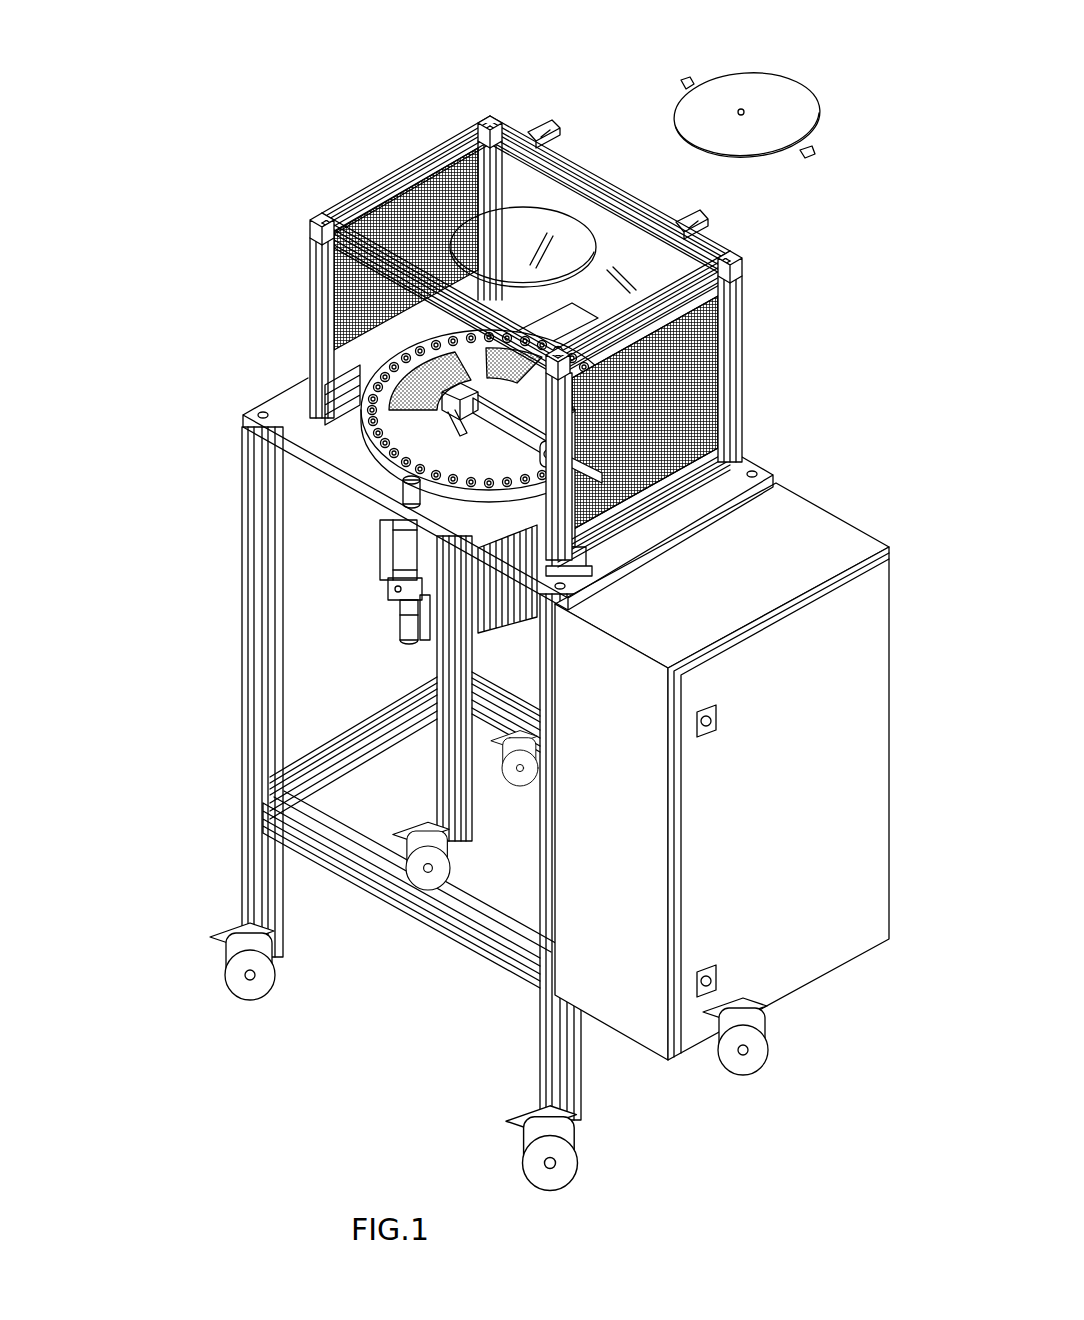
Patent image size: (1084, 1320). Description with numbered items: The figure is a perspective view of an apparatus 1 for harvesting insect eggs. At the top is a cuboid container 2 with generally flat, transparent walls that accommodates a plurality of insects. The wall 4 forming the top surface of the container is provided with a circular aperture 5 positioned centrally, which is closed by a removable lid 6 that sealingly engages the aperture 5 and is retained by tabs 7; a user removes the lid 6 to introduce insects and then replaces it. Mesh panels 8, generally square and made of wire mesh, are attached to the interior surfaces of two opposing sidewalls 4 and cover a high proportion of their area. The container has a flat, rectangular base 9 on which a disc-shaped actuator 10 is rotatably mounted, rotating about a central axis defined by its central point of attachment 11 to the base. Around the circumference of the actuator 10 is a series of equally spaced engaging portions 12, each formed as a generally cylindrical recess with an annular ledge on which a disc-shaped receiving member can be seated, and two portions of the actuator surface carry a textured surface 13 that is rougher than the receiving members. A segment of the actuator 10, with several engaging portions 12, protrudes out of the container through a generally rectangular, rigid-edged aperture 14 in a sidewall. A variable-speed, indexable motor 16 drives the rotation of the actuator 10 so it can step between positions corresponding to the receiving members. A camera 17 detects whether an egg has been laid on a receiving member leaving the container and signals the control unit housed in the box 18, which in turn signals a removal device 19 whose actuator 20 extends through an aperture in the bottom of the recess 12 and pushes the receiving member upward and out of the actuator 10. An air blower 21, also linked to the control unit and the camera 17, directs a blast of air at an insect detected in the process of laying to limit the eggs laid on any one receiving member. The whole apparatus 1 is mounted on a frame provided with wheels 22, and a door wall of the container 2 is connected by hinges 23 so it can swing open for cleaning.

The apparatus 1 is at (138, 214).
The container 2 is at (643, 282).
The wall 4 is at (340, 360).
The circular aperture 5 is at (510, 212).
The removable lid 6 is at (782, 98).
The tabs 7 is at (683, 82).
The mesh panels 8 is at (357, 278).
The base 9 is at (353, 390).
The actuator 10 is at (440, 398).
The central point of attachment 11 is at (657, 458).
The engaging portions 12 is at (400, 527).
The textured surface 13 is at (390, 367).
The aperture 14 is at (575, 528).
The motor 16 is at (380, 628).
The camera 17 is at (545, 402).
The box 18 is at (816, 955).
The removal device 19 is at (395, 580).
The actuator 20 is at (405, 493).
The air blower 21 is at (563, 323).
The wheels 22 is at (580, 1162).
The hinges 23 is at (688, 225).